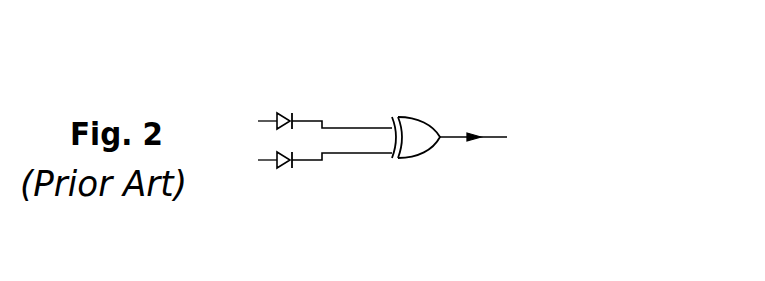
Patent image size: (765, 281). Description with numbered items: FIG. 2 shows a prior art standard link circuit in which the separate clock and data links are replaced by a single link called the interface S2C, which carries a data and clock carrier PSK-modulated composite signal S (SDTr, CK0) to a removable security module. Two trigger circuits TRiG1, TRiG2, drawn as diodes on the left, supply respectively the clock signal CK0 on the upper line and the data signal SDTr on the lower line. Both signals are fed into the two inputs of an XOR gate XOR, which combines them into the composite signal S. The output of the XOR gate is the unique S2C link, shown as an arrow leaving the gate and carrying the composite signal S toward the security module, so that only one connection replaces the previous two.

The trigger circuit TRiG1 is at (280, 113).
The trigger circuit TRiG2 is at (283, 166).
The clock signal CK0 is at (342, 118).
The data signal SDTr is at (342, 165).
The XOR gate XOR is at (417, 128).
The composite signal S is at (552, 140).
The S2C interface S2C is at (474, 151).